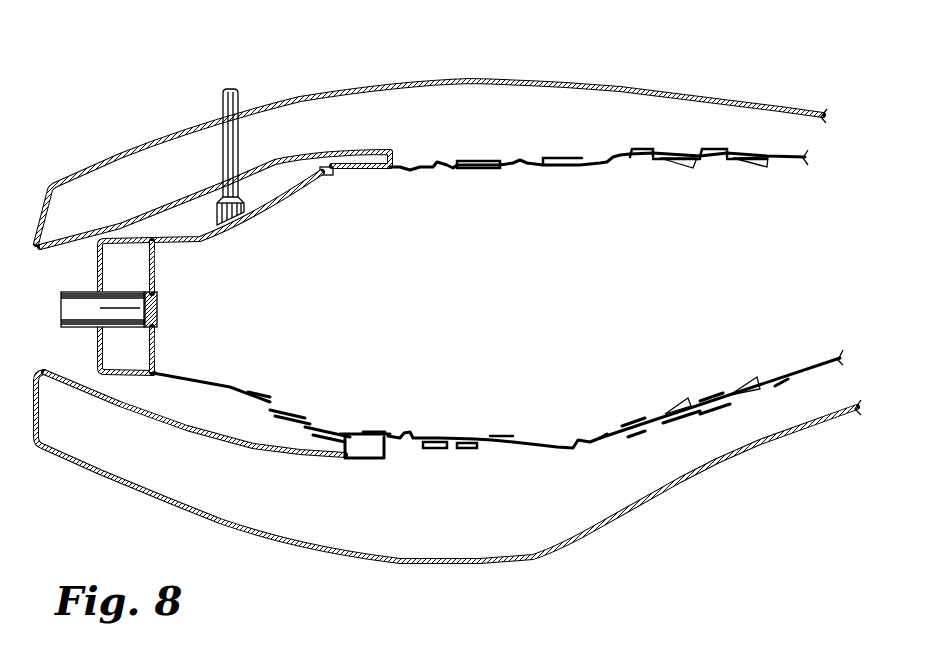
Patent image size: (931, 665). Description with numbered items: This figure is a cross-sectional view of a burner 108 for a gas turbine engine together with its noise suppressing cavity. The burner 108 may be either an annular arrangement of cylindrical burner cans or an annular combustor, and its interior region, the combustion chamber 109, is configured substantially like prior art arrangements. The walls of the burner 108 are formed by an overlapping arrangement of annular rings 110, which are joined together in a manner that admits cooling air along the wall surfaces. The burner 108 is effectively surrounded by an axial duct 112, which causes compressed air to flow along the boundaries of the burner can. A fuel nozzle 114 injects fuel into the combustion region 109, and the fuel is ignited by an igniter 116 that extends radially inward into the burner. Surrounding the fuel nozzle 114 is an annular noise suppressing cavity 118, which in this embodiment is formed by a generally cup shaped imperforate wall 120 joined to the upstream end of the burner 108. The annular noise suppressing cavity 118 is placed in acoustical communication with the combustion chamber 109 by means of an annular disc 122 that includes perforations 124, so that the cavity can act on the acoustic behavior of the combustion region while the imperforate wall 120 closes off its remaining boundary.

The burner 108 is at (627, 432).
The combustion chamber 109 is at (637, 306).
The annular rings 110 is at (267, 406).
The axial duct 112 is at (311, 114).
The fuel nozzle 114 is at (63, 308).
The igniter 116 is at (230, 88).
The annular noise suppressing cavity 118 is at (127, 258).
The cup shaped imperforate wall 120 is at (127, 377).
The annular disc 122 is at (157, 329).
The perforations 124 is at (157, 250).